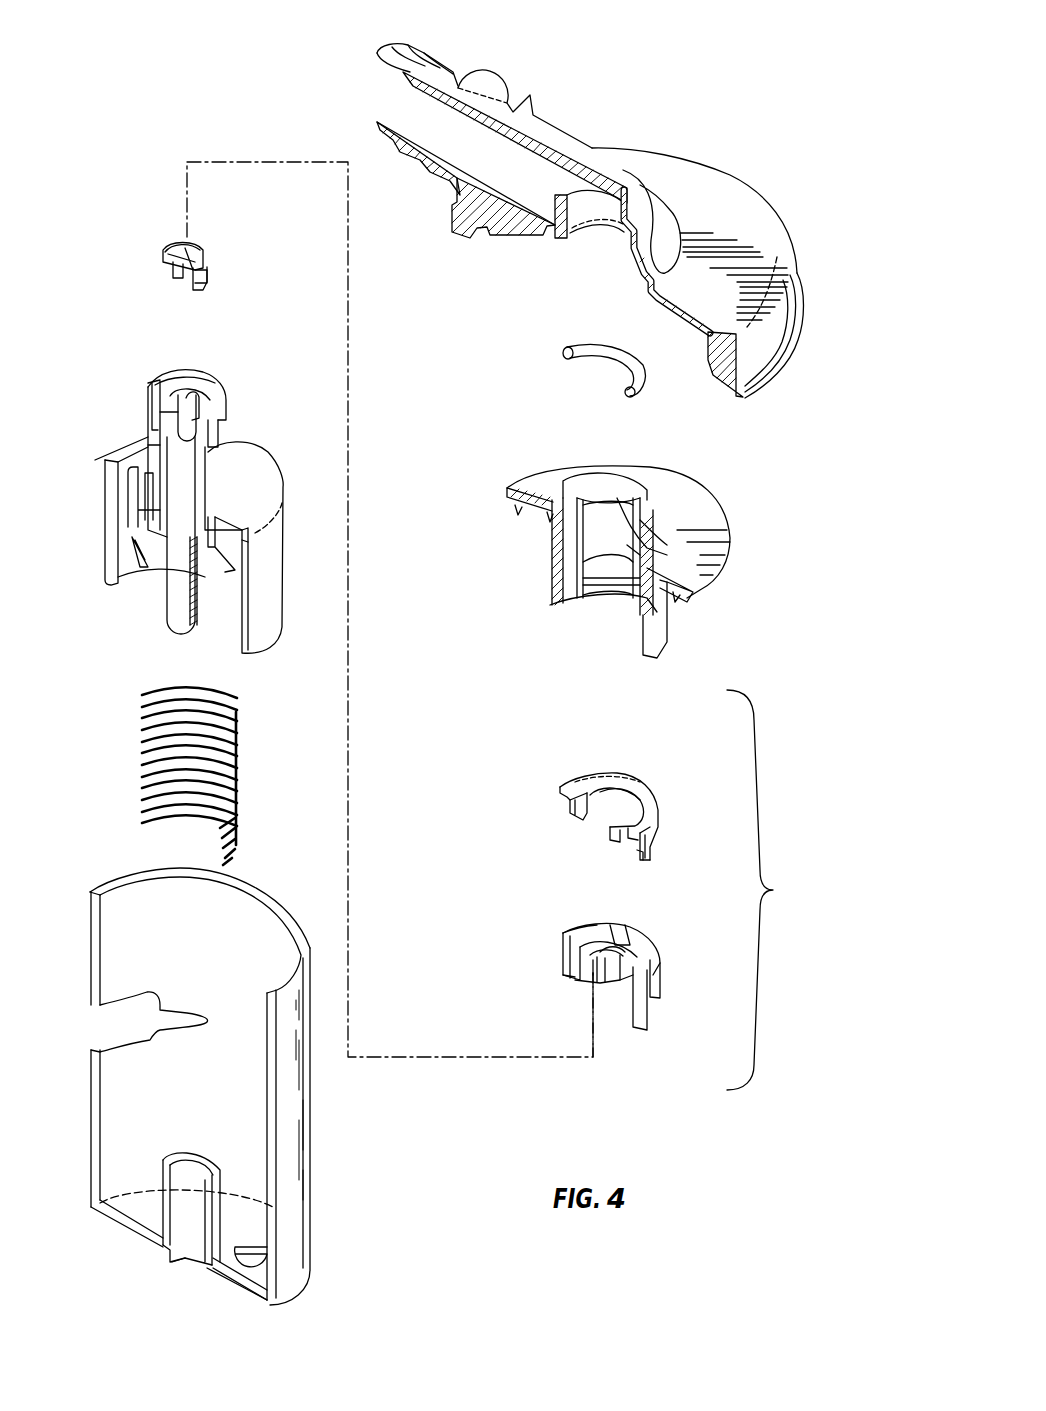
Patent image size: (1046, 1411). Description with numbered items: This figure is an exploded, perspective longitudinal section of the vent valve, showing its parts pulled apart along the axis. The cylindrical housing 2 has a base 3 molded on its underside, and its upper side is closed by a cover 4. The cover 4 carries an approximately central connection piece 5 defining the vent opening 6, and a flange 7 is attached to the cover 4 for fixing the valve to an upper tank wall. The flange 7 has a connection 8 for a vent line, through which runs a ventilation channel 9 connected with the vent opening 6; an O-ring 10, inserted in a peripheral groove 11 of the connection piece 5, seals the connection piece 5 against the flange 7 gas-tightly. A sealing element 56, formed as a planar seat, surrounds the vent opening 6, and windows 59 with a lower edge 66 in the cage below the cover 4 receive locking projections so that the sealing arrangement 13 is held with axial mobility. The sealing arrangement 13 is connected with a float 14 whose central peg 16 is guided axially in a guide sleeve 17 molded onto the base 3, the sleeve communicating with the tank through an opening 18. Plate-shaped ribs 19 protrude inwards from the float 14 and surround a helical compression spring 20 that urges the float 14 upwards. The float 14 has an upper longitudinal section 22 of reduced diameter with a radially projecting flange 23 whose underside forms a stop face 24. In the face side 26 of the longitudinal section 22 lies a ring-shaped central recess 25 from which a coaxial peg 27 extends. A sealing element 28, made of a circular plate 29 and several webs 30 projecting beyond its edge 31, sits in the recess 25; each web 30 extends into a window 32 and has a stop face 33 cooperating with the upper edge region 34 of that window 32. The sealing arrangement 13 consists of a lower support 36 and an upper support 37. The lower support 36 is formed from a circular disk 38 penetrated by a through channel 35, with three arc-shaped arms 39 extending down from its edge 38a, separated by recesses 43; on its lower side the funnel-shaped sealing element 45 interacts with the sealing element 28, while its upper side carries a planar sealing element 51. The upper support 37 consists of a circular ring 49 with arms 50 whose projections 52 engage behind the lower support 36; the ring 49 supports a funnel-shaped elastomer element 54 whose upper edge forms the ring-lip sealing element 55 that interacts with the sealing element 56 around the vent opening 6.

The housing 2 is at (283, 1123).
The base 3 is at (247, 1273).
The cover 4 is at (690, 547).
The connection piece 5 is at (633, 530).
The vent opening 6 is at (603, 490).
The flange 7 is at (750, 230).
The connection 8 is at (537, 128).
The ventilation channel 9 is at (523, 167).
The O-ring 10 is at (583, 348).
The peripheral groove 11 is at (537, 487).
The sealing arrangement 13 is at (773, 890).
The float 14 is at (105, 555).
The central peg 16 is at (180, 590).
The guide sleeve 17 is at (163, 1190).
The opening 18 is at (183, 1257).
The ribs 19 is at (235, 585).
The helical compression spring 20 is at (140, 752).
The upper longitudinal section 22 is at (157, 410).
The flange 23 is at (150, 378).
The stop face 24 is at (148, 390).
The central recess 25 is at (200, 385).
The face side 26 is at (160, 378).
The peg 27 is at (157, 440).
The sealing element 28 is at (187, 250).
The plate 29 is at (170, 253).
The webs 30 is at (203, 283).
The edge 31 is at (200, 247).
The window 32 is at (212, 417).
The stop face 33 is at (207, 267).
The upper edge region 34 is at (190, 385).
The through channel 35 is at (600, 955).
The lower support 36 is at (647, 930).
The upper support 37 is at (655, 795).
The circular disk 38 is at (585, 935).
The edge 38a is at (650, 965).
The arms 39 is at (640, 1010).
The recesses 43 is at (585, 960).
The sealing element 45 is at (605, 975).
The circular ring 49 is at (627, 787).
The arms 50 is at (653, 837).
The sealing element 51 is at (625, 950).
The projections 52 is at (640, 855).
The elastomer element 54 is at (590, 790).
The sealing element 55 is at (607, 778).
The sealing element 56 is at (633, 560).
The windows 59 is at (593, 540).
The lower edge 66 is at (590, 570).